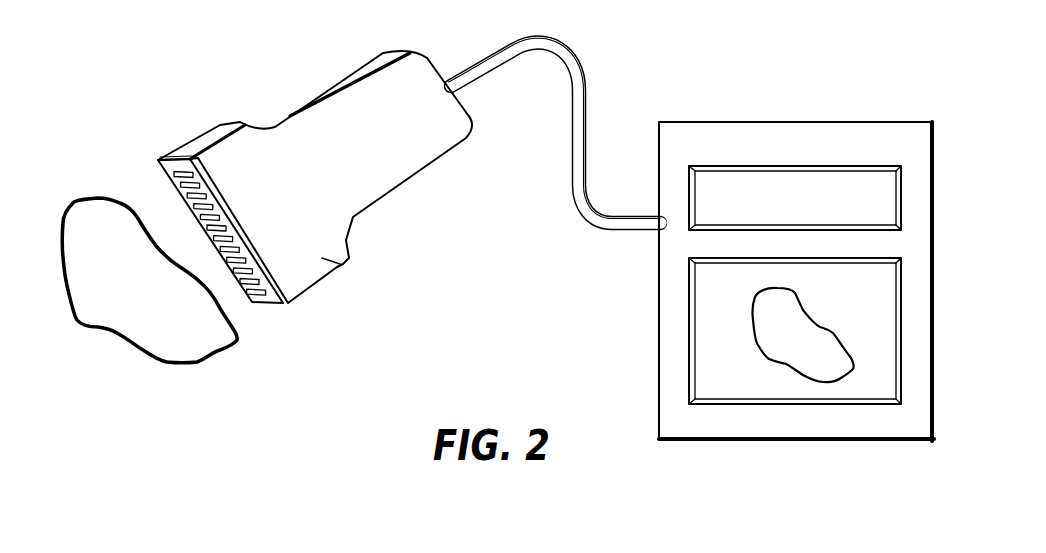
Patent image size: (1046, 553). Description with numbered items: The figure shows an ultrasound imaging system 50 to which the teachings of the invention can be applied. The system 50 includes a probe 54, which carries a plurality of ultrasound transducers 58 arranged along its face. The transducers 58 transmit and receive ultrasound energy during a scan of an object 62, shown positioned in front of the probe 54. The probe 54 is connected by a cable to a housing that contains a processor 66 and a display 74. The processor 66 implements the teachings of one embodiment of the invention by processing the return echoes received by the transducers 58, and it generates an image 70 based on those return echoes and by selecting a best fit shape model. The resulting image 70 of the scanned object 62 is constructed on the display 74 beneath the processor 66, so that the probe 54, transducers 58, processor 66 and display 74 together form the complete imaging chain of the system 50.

The ultrasound imaging system 50 is at (649, 56).
The probe 54 is at (342, 264).
The ultrasound transducers 58 is at (233, 288).
The object 62 is at (197, 363).
The processor 66 is at (786, 180).
The image 70 is at (817, 375).
The display 74 is at (875, 387).